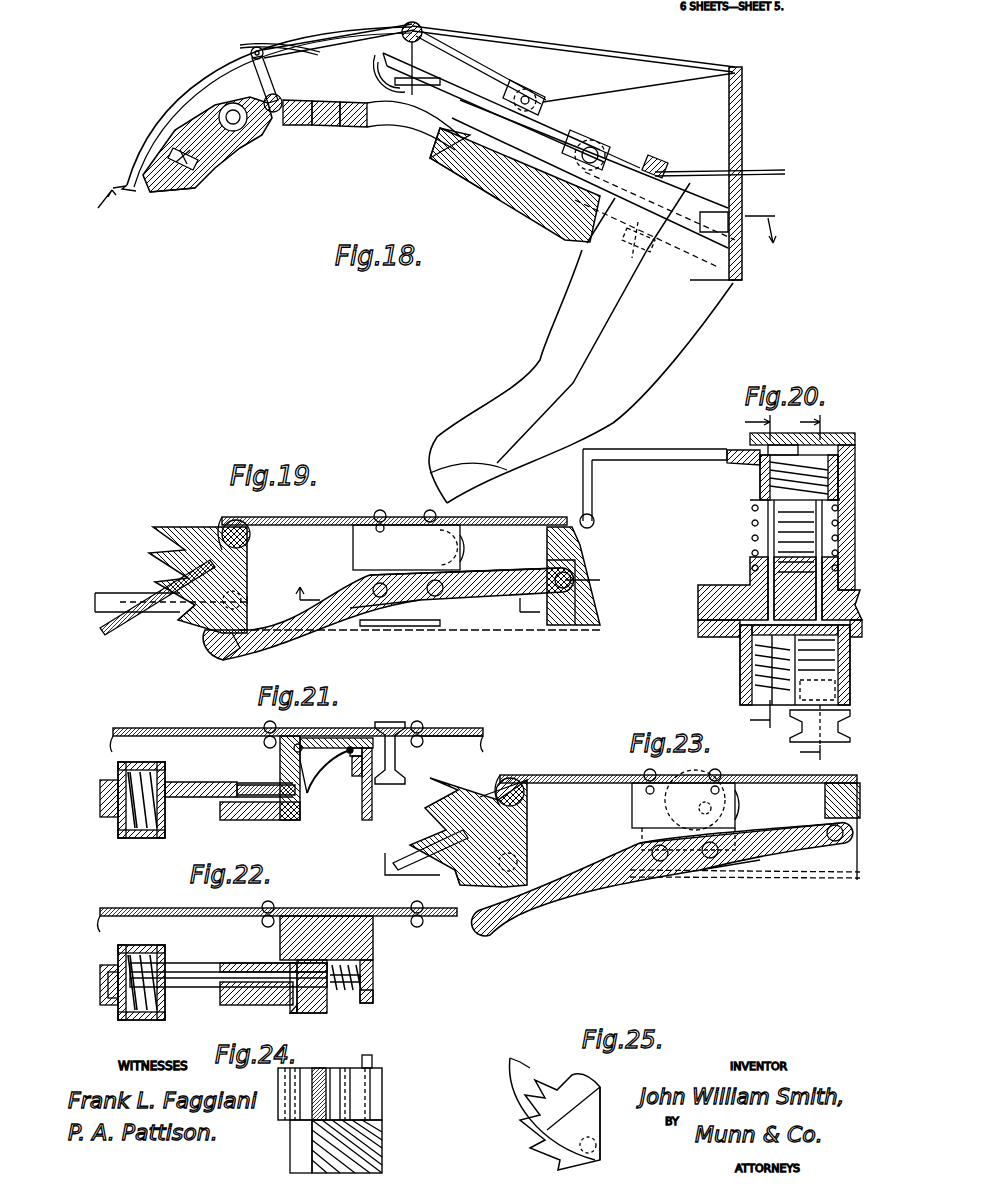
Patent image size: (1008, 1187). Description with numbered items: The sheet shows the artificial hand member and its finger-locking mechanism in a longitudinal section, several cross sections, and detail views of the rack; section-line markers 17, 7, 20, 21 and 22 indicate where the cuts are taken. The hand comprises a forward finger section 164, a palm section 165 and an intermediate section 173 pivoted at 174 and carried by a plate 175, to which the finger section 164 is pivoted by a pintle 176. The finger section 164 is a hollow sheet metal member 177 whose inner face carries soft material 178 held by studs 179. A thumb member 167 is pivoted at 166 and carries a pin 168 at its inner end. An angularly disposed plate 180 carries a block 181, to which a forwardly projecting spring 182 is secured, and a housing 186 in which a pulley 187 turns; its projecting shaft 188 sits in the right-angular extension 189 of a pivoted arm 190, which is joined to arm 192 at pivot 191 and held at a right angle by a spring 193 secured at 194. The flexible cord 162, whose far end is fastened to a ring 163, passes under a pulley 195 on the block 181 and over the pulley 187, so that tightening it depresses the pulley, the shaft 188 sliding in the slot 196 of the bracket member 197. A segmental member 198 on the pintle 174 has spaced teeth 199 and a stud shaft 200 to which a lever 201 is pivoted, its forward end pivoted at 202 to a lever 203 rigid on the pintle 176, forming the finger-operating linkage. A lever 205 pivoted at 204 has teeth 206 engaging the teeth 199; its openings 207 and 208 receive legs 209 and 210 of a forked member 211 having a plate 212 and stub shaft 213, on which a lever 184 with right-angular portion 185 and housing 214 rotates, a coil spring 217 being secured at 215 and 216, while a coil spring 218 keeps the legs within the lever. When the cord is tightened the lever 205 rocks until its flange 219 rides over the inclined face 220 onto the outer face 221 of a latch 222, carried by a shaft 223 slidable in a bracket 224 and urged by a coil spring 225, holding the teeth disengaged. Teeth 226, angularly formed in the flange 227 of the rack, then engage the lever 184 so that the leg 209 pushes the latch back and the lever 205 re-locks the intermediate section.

In FIG. 18, the flexible cord 162 is at (527, 87).
In FIG. 18, the ring 163 is at (323, 117).
In FIG. 18, the finger section 164 is at (217, 160).
In FIG. 18, the palm section 165 is at (490, 140).
In FIG. 18, the pivot 166 is at (607, 253).
In FIG. 18, the thumb member 167 is at (537, 358).
In FIG. 18, the pin 168 is at (660, 163).
In FIG. 18, the intermediate section 173 is at (363, 123).
In FIG. 18, the pivot 174 is at (433, 26).
In FIG. 19, the pivot 174 is at (277, 518).
In FIG. 23, the pivot 174 is at (527, 780).
In FIG. 18, the plate 175 is at (292, 112).
In FIG. 19, the plate 175 is at (127, 603).
In FIG. 23, the plate 175 is at (480, 797).
In FIG. 18, the pintle 176 is at (272, 123).
In FIG. 18, the hollow sheet metal member 177 is at (170, 98).
In FIG. 18, the soft material 178 is at (180, 180).
In FIG. 18, the studs 179 is at (190, 167).
In FIG. 18, the angularly disposed plate 180 is at (605, 126).
In FIG. 19, the angularly disposed plate 180 is at (508, 523).
In FIG. 21, the angularly disposed plate 180 is at (170, 730).
In FIG. 22, the angularly disposed plate 180 is at (163, 907).
In FIG. 23, the angularly disposed plate 180 is at (577, 775).
In FIG. 18, the block 181 is at (622, 155).
In FIG. 18, the spring 182 is at (550, 163).
In FIG. 23, the spring 182 is at (770, 877).
In FIG. 18, the lever 184 is at (436, 88).
In FIG. 20, the lever 184 is at (645, 465).
In FIG. 18, the right-angular portion 185 is at (455, 48).
In FIG. 19, the right-angular portion 185 is at (597, 523).
In FIG. 18, the housing 186 is at (478, 135).
In FIG. 21, the housing 186 is at (470, 733).
In FIG. 18, the pulley 187 is at (533, 90).
In FIG. 19, the pulley 187 is at (467, 552).
In FIG. 20, the pulley 187 is at (810, 727).
In FIG. 21, the pulley 187 is at (418, 732).
In FIG. 23, the pulley 187 is at (738, 810).
In FIG. 21, the projecting shaft 188 is at (390, 725).
In FIG. 21, the right-angular extension 189 is at (353, 780).
In FIG. 21, the pivoted arm 190 is at (325, 742).
In FIG. 21, the pivot 191 is at (298, 743).
In FIG. 21, the arm 192 is at (302, 807).
In FIG. 21, the spring 193 is at (325, 770).
In FIG. 21, the pivot 194 is at (352, 747).
In FIG. 18, the pulley 195 is at (613, 187).
In FIG. 21, the slot 196 is at (373, 793).
In FIG. 21, the bracket member 197 is at (280, 748).
In FIG. 18, the segmental member 198 is at (404, 27).
In FIG. 19, the segmental member 198 is at (193, 575).
In FIG. 23, the segmental member 198 is at (517, 835).
In FIG. 24, the segmental member 198 is at (353, 1102).
In FIG. 25, the segmental member 198 is at (558, 1093).
In FIG. 19, the teeth 199 is at (190, 623).
In FIG. 23, the teeth 199 is at (487, 887).
In FIG. 25, the teeth 199 is at (513, 1118).
In FIG. 19, the stud shaft 200 is at (248, 595).
In FIG. 23, the stud shaft 200 is at (520, 862).
In FIG. 24, the stud shaft 200 is at (375, 1060).
In FIG. 25, the stud shaft 200 is at (596, 1142).
In FIG. 18, the lever 201 is at (283, 57).
In FIG. 19, the lever 201 is at (145, 605).
In FIG. 23, the lever 201 is at (433, 853).
In FIG. 18, the pivot 202 is at (250, 52).
In FIG. 18, the lever 203 is at (262, 78).
In FIG. 18, the pivot 204 is at (613, 153).
In FIG. 19, the pivot 204 is at (573, 578).
In FIG. 23, the pivot 204 is at (827, 843).
In FIG. 18, the lever 205 is at (400, 97).
In FIG. 19, the lever 205 is at (500, 597).
In FIG. 20, the lever 205 is at (761, 597).
In FIG. 21, the lever 205 is at (217, 820).
In FIG. 22, the lever 205 is at (227, 997).
In FIG. 23, the lever 205 is at (640, 890).
In FIG. 19, the teeth 206 is at (217, 657).
In FIG. 23, the teeth 206 is at (527, 933).
In FIG. 19, the opening 207 is at (370, 588).
In FIG. 20, the opening 207 is at (783, 630).
In FIG. 22, the opening 207 is at (235, 978).
In FIG. 23, the opening 207 is at (667, 867).
In FIG. 19, the opening 208 is at (470, 580).
In FIG. 21, the opening 208 is at (237, 783).
In FIG. 23, the opening 208 is at (713, 867).
In FIG. 19, the leg 209 is at (390, 572).
In FIG. 20, the leg 209 is at (770, 603).
In FIG. 22, the leg 209 is at (217, 980).
In FIG. 23, the leg 209 is at (637, 847).
In FIG. 19, the leg 210 is at (436, 580).
In FIG. 20, the leg 210 is at (817, 590).
In FIG. 21, the leg 210 is at (214, 790).
In FIG. 23, the leg 210 is at (717, 835).
In FIG. 20, the forked member 211 is at (753, 527).
In FIG. 20, the plate 212 is at (753, 512).
In FIG. 21, the plate 212 is at (163, 768).
In FIG. 22, the plate 212 is at (162, 970).
In FIG. 20, the stub shaft 213 is at (763, 448).
In FIG. 22, the stub shaft 213 is at (147, 967).
In FIG. 20, the housing 214 is at (757, 492).
In FIG. 21, the housing 214 is at (120, 827).
In FIG. 20, the securing point 215 is at (757, 465).
In FIG. 20, the securing point 216 is at (753, 542).
In FIG. 20, the coil spring 217 is at (757, 475).
In FIG. 21, the coil spring 217 is at (150, 833).
In FIG. 22, the coil spring 217 is at (135, 1018).
In FIG. 20, the coil spring 218 is at (755, 553).
In FIG. 22, the flange 219 is at (287, 1005).
In FIG. 22, the inclined face 220 is at (286, 1024).
In FIG. 19, the outer face 221 is at (380, 622).
In FIG. 22, the outer face 221 is at (315, 1028).
In FIG. 22, the latch 222 is at (320, 1007).
In FIG. 22, the shaft 223 is at (373, 980).
In FIG. 22, the bracket 224 is at (373, 962).
In FIG. 22, the coil spring 225 is at (373, 998).
In FIG. 24, the teeth 226 is at (360, 1147).
In FIG. 25, the teeth 226 is at (600, 1087).
In FIG. 24, the flange 227 is at (302, 1133).
In FIG. 25, the flange 227 is at (520, 1062).
In FIG. 18, the section line 17 is at (106, 204).
In FIG. 18, the section line 7 is at (739, 173).
In FIG. 19, the section line 20 is at (408, 602).
In FIG. 20, the section line 21 is at (802, 588).
In FIG. 20, the section line 22 is at (746, 574).